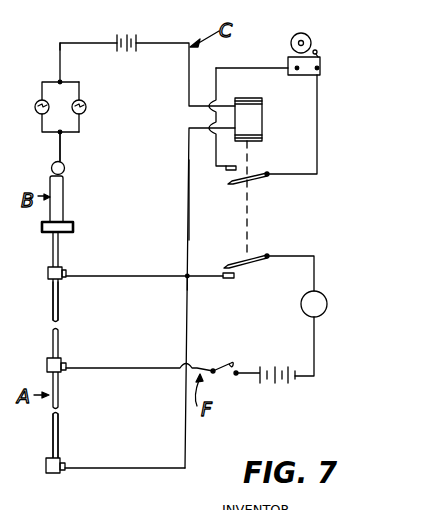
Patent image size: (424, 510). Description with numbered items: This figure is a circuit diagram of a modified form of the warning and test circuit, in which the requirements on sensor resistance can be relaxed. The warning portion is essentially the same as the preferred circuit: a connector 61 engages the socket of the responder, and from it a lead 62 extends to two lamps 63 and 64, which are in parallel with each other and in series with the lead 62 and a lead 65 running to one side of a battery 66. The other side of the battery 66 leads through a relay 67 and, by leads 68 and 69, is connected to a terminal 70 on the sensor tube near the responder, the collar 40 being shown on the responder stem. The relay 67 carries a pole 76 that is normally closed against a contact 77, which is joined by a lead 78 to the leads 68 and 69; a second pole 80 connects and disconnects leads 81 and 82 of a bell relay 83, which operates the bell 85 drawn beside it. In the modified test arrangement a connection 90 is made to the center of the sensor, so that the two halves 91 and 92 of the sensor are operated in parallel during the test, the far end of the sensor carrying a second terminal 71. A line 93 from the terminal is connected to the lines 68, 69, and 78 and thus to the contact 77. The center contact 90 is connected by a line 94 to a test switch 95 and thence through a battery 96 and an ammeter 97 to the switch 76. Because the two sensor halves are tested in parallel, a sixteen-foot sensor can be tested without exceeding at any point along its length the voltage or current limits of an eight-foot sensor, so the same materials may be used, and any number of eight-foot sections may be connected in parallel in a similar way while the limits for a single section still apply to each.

The collar 40 is at (68, 222).
The connector 61 is at (53, 166).
The lead 62 is at (61, 150).
The lamp 63 is at (40, 103).
The lamp 64 is at (87, 105).
The lead 65 is at (58, 53).
The battery 66 is at (130, 50).
The relay 67 is at (262, 118).
The lead 68 is at (188, 210).
The lead 69 is at (122, 276).
The terminal 70 is at (66, 268).
The second terminal 71 is at (63, 462).
The pole of relay 76 is at (250, 262).
The contact 77 is at (229, 281).
The lead 78 is at (193, 282).
The second pole 80 is at (253, 178).
The lead 81 is at (317, 160).
The lead 82 is at (272, 67).
The bell relay 83 is at (322, 62).
The bell 85 is at (311, 36).
The connection 90 is at (63, 360).
The half of sensor 91 is at (53, 306).
The half of sensor 92 is at (53, 434).
The line 93 is at (170, 469).
The line 94 is at (127, 368).
The test switch 95 is at (231, 365).
The battery 96 is at (280, 385).
The ammeter 97 is at (325, 312).